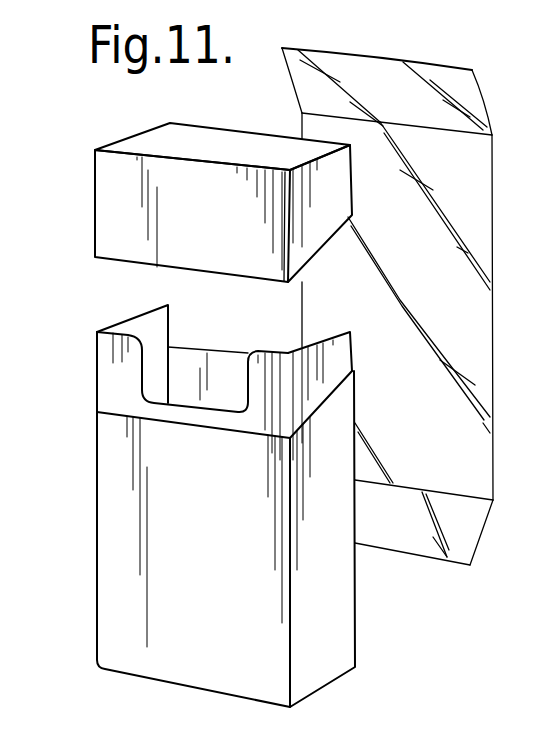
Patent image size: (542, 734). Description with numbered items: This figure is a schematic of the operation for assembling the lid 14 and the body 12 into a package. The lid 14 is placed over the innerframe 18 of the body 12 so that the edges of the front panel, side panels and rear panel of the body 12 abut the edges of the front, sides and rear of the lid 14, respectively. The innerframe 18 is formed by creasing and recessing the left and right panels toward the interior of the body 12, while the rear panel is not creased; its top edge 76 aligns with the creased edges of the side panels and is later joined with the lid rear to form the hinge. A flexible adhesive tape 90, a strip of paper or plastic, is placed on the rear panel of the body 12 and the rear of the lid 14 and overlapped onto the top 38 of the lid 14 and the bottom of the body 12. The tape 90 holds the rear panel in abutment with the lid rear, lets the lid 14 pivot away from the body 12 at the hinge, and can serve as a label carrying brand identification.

The body 12 is at (86, 495).
The lid 14 is at (190, 185).
The innerframe 18 is at (190, 377).
The top of the lid 38 is at (235, 150).
The top edge of the rear panel 76 is at (220, 350).
The flexible adhesive tape 90 is at (497, 326).